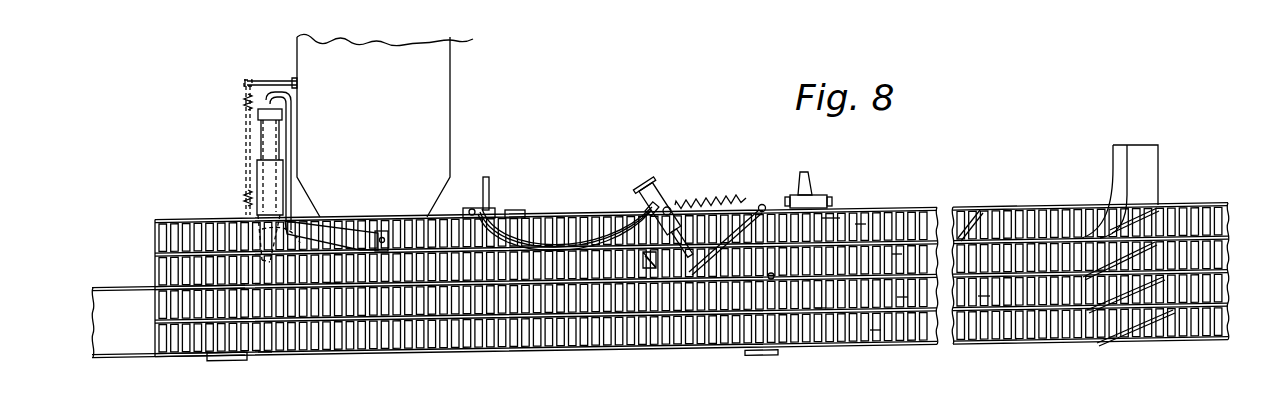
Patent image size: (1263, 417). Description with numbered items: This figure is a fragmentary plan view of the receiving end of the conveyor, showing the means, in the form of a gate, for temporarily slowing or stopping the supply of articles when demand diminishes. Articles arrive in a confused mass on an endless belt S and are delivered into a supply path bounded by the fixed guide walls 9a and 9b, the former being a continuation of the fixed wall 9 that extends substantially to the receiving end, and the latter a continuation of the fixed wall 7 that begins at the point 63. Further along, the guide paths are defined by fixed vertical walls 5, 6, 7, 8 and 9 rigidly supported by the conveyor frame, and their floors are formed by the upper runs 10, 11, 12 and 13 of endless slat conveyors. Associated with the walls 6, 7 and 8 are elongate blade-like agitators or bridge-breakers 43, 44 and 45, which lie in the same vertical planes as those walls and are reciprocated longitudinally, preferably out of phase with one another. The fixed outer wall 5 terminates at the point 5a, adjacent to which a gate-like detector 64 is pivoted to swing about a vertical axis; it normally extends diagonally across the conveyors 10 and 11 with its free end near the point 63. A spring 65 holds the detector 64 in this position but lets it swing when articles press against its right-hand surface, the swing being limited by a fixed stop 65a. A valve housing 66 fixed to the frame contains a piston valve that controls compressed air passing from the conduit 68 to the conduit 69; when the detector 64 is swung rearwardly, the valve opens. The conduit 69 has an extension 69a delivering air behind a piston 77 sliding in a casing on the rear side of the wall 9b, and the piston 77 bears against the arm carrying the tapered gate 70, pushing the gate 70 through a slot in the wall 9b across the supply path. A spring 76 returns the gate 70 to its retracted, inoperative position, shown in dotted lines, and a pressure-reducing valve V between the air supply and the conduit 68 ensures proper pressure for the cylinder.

The endless belt S is at (110, 302).
The fixed outer wall 5 is at (962, 242).
The terminating point of outer wall 5a is at (765, 206).
The fixed guide wall 6 is at (968, 245).
The fixed guide wall 7 is at (997, 272).
The fixed guide wall 8 is at (990, 274).
The fixed wall 9 is at (983, 298).
The continuation of fixed wall 9a is at (265, 353).
The continuation of fixed wall 9b is at (332, 284).
The upper run of endless conveyor 10 is at (860, 224).
The upper run of endless conveyor 11 is at (897, 254).
The upper run of endless conveyor 12 is at (902, 298).
The upper run of endless conveyor 13 is at (875, 331).
The agitator 43 is at (828, 218).
The agitator 44 is at (768, 279).
The agitator 45 is at (820, 309).
The beginning point of wall continuation 63 is at (650, 258).
The gate-like detector 64 is at (728, 210).
The spring 65 is at (680, 197).
The fixed stop 65a is at (642, 266).
The valve housing 66 is at (648, 188).
The conduit 68 is at (533, 226).
The conduit 69 is at (558, 250).
The conduit extension 69a is at (294, 128).
The gate 70 is at (250, 223).
The spring 76 is at (258, 158).
The piston 77 is at (262, 188).
The pressure-reducing valve V is at (491, 210).